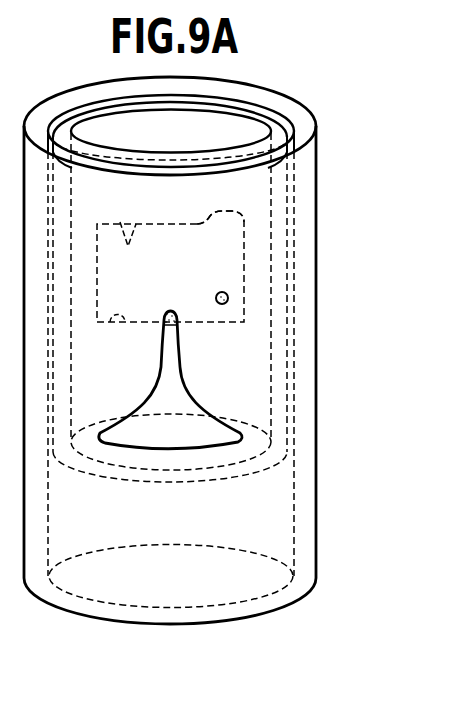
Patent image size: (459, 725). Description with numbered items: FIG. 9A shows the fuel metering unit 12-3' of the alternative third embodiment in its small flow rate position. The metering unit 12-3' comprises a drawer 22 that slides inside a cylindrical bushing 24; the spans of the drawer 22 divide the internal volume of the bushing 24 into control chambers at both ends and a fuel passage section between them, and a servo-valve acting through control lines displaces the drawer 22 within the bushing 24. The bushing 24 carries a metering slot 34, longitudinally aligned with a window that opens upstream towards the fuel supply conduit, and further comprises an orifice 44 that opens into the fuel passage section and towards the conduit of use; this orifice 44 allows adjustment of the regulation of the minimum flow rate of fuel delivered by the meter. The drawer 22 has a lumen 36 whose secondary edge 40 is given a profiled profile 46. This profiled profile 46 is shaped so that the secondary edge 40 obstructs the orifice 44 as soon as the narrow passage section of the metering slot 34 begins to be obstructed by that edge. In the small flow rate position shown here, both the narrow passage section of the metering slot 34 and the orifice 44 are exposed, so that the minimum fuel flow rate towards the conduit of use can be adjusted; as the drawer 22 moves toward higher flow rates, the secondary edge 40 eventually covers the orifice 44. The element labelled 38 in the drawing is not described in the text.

The metering unit 12-3' is at (207, 375).
The drawer 22 is at (208, 104).
The bushing 24 is at (282, 104).
The metering slot 34 is at (218, 432).
The lumen 36 is at (243, 280).
The arch / opening 38 is at (128, 325).
The secondary edge 40 is at (123, 223).
The orifice 44 is at (222, 304).
The profiled profile 46 is at (234, 221).